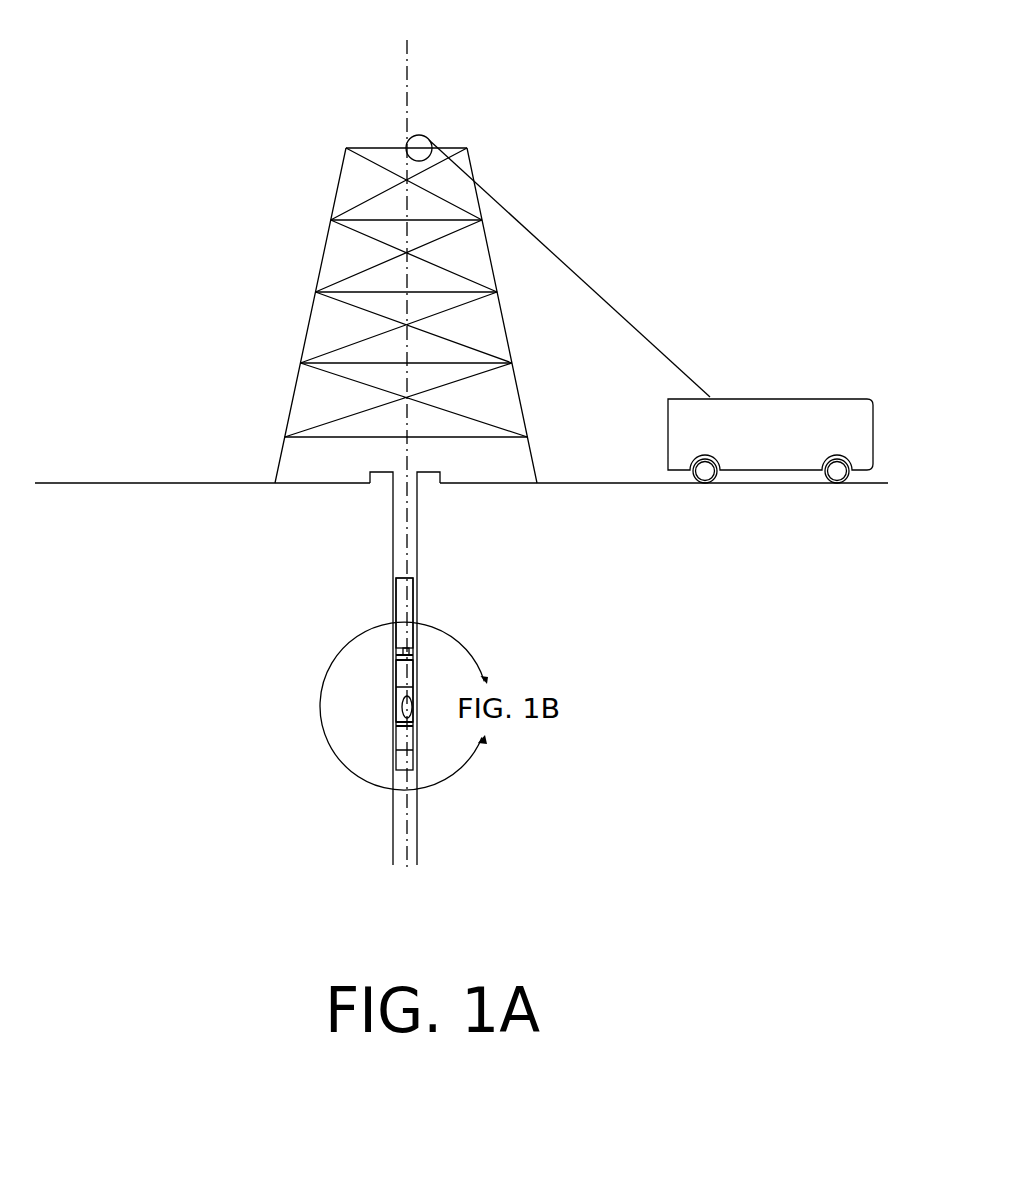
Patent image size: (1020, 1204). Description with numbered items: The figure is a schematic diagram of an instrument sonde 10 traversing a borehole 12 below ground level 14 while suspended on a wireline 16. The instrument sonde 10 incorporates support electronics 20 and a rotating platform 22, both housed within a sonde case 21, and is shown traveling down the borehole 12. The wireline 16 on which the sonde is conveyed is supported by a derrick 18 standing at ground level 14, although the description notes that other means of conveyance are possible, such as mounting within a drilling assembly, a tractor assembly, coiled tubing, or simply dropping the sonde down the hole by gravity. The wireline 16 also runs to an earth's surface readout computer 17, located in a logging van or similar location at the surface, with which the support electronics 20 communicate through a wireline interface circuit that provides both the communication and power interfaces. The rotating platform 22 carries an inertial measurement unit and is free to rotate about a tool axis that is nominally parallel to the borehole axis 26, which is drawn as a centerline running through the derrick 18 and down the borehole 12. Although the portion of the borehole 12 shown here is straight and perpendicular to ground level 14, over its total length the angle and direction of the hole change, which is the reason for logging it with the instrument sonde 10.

The instrument sonde 10 is at (324, 635).
The borehole 12 is at (417, 533).
The ground level 14 is at (152, 483).
The wireline 16 is at (612, 303).
The earth's surface readout computer 17 is at (768, 428).
The derrick 18 is at (325, 253).
The support electronics 20 is at (403, 608).
The sonde case 21 is at (395, 637).
The rotating platform 22 is at (393, 687).
The borehole axis 26 is at (407, 83).